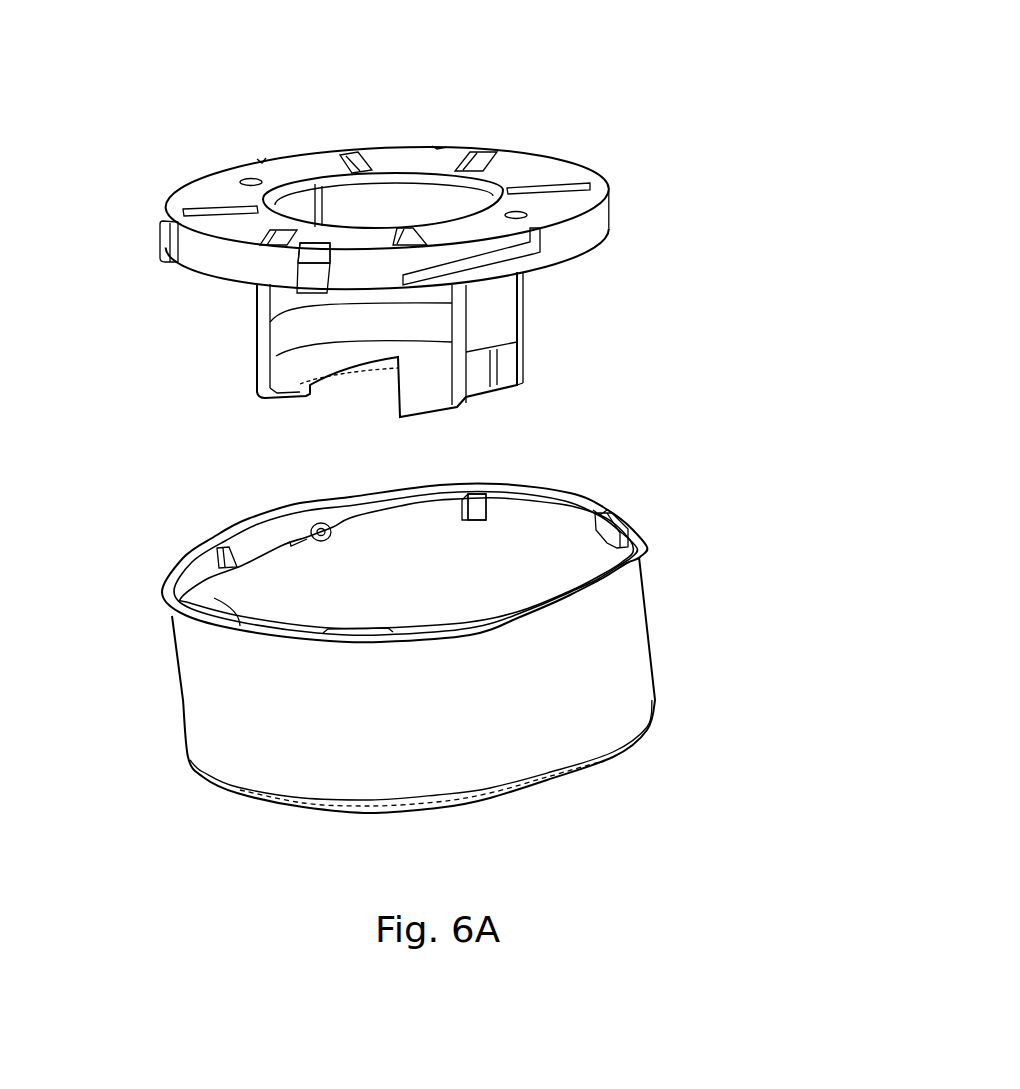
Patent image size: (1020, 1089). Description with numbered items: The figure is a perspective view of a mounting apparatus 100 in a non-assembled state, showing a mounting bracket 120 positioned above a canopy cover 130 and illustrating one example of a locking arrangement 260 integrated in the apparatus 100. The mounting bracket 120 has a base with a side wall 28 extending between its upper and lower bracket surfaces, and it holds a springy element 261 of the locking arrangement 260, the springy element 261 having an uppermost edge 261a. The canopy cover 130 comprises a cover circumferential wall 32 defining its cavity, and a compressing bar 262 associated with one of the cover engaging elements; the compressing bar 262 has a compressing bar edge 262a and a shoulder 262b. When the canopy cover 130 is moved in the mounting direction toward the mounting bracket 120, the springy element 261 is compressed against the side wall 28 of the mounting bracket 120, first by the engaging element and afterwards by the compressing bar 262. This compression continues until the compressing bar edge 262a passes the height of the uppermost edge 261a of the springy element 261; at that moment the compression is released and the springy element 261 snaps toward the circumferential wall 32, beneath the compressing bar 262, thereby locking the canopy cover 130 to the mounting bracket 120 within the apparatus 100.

The mounting apparatus 100 is at (823, 655).
The mounting bracket 120 is at (567, 106).
The side wall 28 is at (196, 250).
The springy element 261 is at (232, 283).
The uppermost edge 261a is at (299, 257).
The locking arrangement 260 is at (312, 283).
The canopy cover 130 is at (680, 612).
The cover circumferential wall 32 is at (228, 636).
The compressing bar 262 is at (405, 492).
The shoulder 262b is at (482, 492).
The compressing bar edge 262a is at (435, 510).